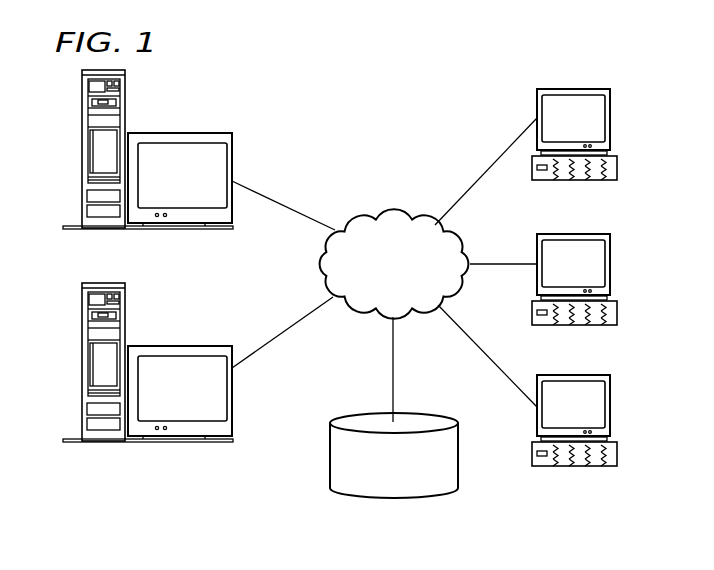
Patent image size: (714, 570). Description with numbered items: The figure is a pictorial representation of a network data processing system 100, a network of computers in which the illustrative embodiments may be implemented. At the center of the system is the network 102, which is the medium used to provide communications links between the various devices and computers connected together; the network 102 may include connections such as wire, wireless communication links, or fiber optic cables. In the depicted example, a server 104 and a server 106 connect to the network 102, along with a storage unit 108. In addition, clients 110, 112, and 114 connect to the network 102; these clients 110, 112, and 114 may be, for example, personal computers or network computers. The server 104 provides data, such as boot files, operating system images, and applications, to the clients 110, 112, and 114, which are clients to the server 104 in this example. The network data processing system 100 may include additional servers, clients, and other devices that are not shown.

The network data processing system 100 is at (446, 99).
The network 102 is at (365, 213).
The server 104 is at (82, 150).
The server 106 is at (82, 358).
The storage unit 108 is at (378, 498).
The client 110 is at (613, 120).
The client 112 is at (613, 265).
The client 114 is at (612, 405).